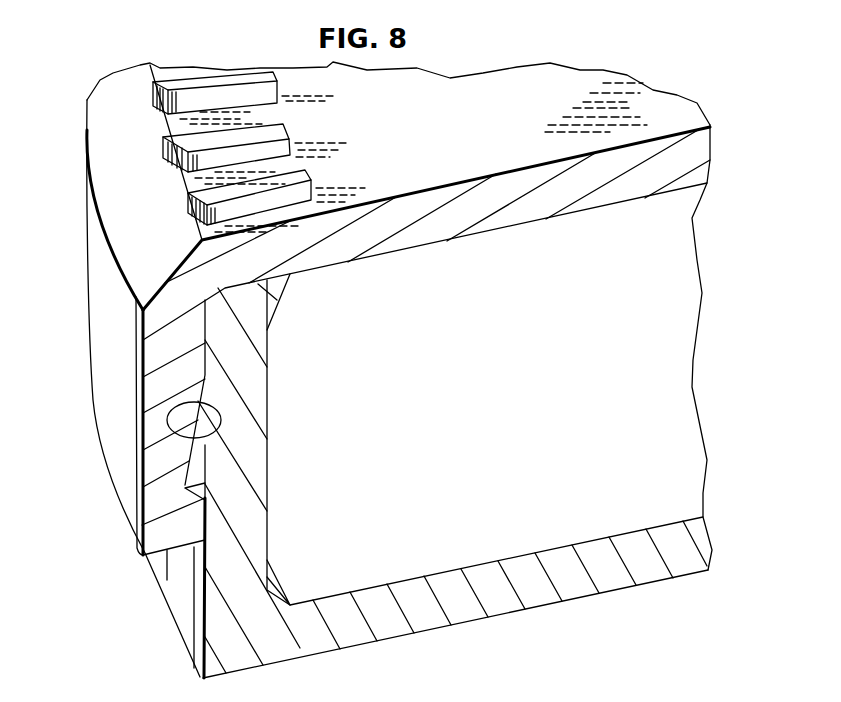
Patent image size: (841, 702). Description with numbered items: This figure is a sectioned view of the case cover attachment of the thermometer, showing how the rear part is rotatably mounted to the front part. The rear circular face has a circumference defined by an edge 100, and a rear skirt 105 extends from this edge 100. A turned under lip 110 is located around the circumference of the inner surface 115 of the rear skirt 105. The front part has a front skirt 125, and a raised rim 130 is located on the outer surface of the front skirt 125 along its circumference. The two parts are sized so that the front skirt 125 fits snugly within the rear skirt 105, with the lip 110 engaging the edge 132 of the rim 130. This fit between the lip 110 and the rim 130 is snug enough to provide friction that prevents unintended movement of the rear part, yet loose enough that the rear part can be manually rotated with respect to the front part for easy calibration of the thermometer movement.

The edge 100 is at (135, 305).
The rear skirt 105 is at (157, 350).
The turned under lip 110 is at (168, 533).
The inner surface 115 is at (180, 437).
The front skirt 125 is at (213, 600).
The raised rim 130 is at (222, 472).
The edge 132 is at (185, 490).